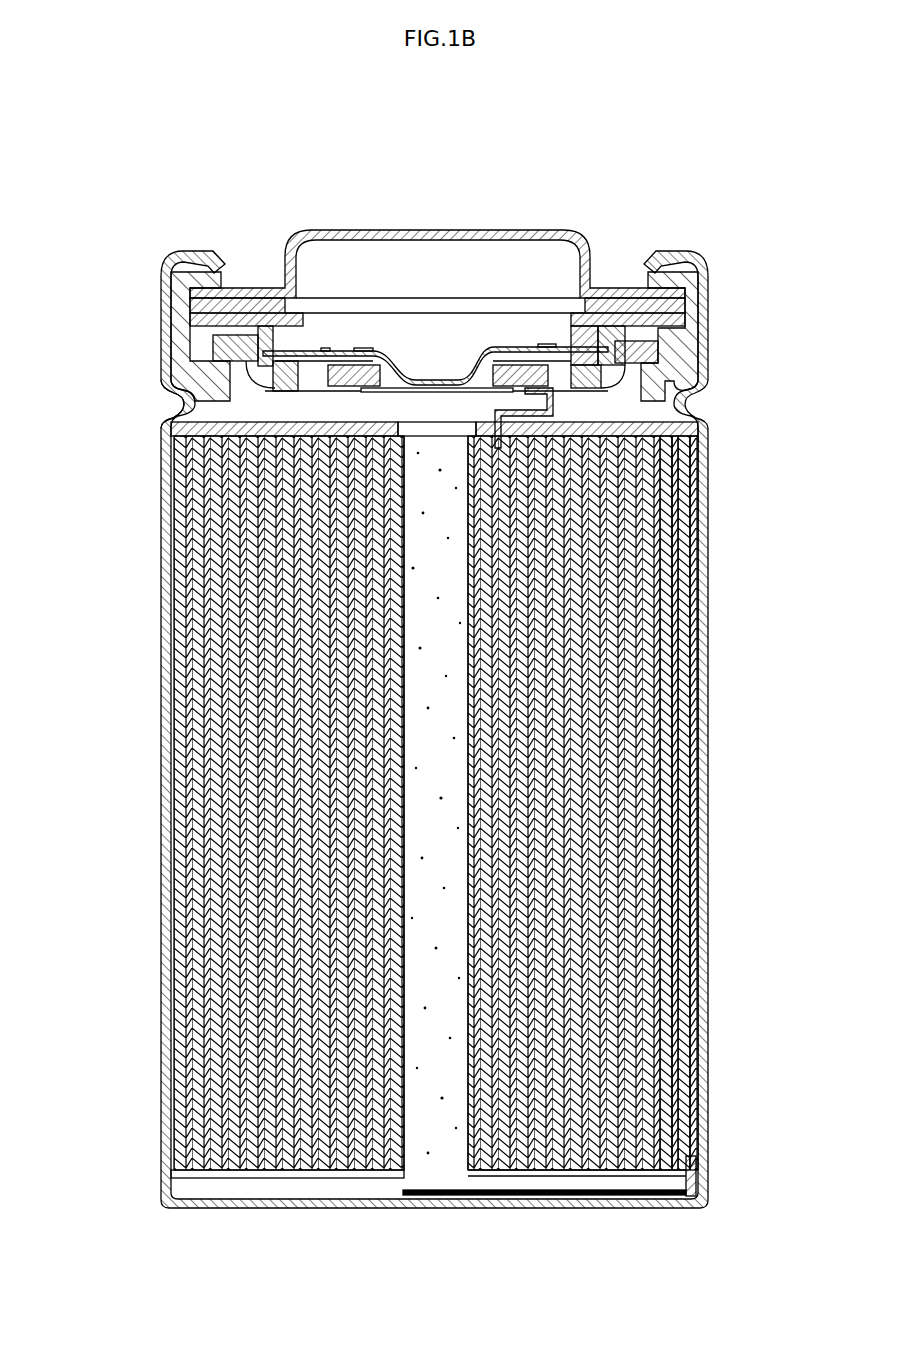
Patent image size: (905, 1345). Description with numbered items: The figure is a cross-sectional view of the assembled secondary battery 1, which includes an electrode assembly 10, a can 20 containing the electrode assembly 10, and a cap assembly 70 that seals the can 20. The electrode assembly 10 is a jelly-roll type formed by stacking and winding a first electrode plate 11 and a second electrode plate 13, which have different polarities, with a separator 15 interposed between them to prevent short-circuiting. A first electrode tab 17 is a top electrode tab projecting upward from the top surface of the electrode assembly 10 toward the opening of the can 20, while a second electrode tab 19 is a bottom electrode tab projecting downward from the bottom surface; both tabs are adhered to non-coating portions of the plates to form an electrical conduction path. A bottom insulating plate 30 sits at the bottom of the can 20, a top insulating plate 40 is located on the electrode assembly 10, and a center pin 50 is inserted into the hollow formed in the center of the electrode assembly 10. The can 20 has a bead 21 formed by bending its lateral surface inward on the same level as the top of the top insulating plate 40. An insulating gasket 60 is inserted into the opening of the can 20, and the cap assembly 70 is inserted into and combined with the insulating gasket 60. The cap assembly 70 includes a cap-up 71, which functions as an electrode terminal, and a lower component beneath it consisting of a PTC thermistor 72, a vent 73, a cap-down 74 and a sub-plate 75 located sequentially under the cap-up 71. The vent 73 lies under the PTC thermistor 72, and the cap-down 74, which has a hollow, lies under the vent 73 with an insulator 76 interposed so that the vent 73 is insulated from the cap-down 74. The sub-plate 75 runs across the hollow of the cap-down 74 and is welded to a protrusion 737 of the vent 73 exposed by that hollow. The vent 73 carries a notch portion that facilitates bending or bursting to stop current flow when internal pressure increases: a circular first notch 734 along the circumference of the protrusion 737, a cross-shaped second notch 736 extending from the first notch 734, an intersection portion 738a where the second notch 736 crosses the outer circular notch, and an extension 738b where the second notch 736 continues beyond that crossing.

The secondary battery 1 is at (132, 114).
The electrode assembly 10 is at (768, 392).
The first electrode plate 11 is at (648, 617).
The second electrode plate 13 is at (676, 538).
The separator 15 is at (680, 497).
The first electrode tab 17 is at (545, 397).
The second electrode tab 19 is at (612, 1207).
The can 20 is at (155, 523).
The bead 21 is at (168, 384).
The bottom insulating plate 30 is at (295, 1166).
The top insulating plate 40 is at (225, 399).
The center pin 50 is at (405, 590).
The insulating gasket 60 is at (701, 303).
The cap assembly 70 is at (240, 147).
The cap-up 71 is at (568, 320).
The positive temperature coefficient (PTC) thermistor 72 is at (627, 290).
The vent 73 is at (281, 262).
The cap-down 74 is at (427, 371).
The sub-plate 75 is at (591, 305).
The insulator 76 is at (245, 280).
The first notch 734 is at (362, 328).
The second notch 736 is at (345, 328).
The protrusion 737 is at (496, 339).
The intersection portion 738a is at (327, 328).
The extension 738b is at (314, 328).